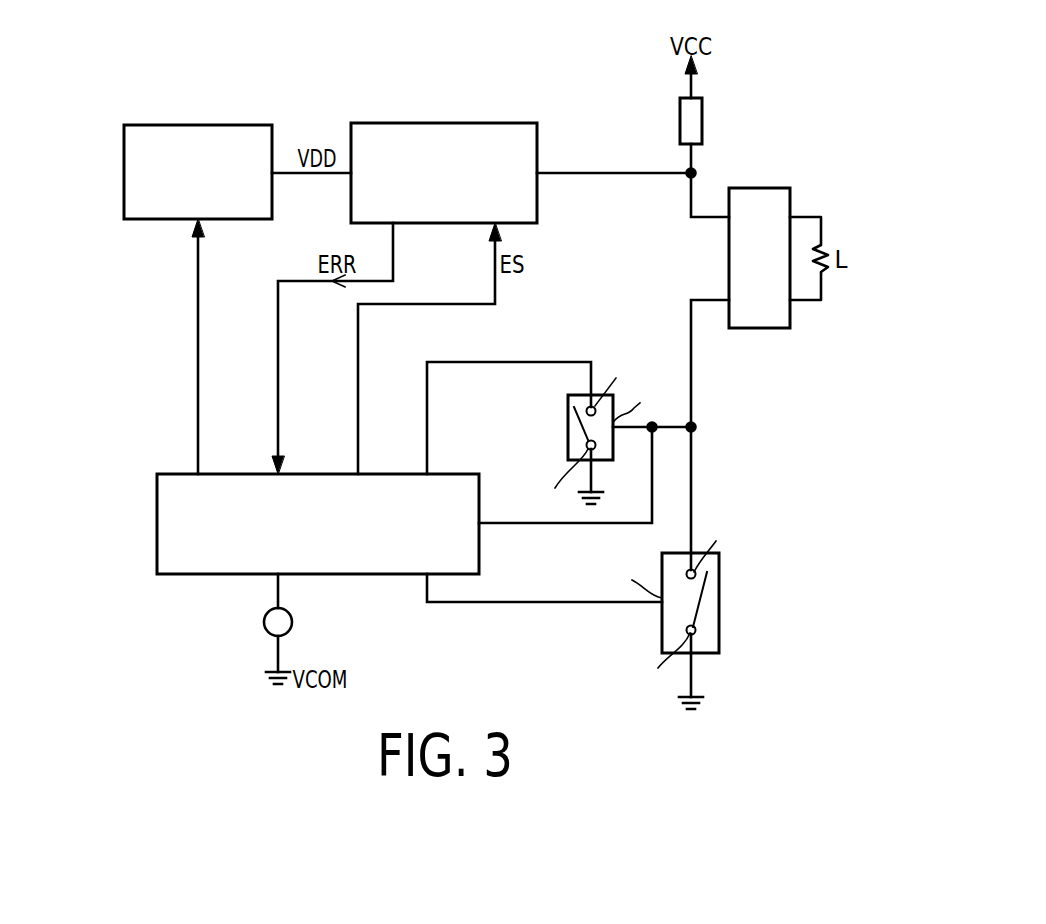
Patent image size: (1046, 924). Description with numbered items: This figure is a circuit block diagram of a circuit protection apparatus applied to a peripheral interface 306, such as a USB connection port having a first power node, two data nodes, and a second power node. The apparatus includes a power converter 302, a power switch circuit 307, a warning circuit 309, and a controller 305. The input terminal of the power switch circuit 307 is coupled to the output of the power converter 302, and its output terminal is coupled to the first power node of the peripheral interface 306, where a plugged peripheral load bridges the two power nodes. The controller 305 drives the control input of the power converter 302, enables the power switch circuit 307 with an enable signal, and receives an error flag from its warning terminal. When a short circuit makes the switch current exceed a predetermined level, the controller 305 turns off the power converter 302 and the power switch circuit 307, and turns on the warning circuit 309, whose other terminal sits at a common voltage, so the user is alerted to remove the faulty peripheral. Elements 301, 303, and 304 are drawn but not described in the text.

The resistor 301 is at (703, 120).
The power converter 302 is at (124, 176).
The first switch 303 is at (568, 427).
The second switch 304 is at (722, 601).
The controller 305 is at (157, 523).
The peripheral interface 306 is at (757, 188).
The power switch circuit 307 is at (456, 123).
The warning circuit 309 is at (293, 621).